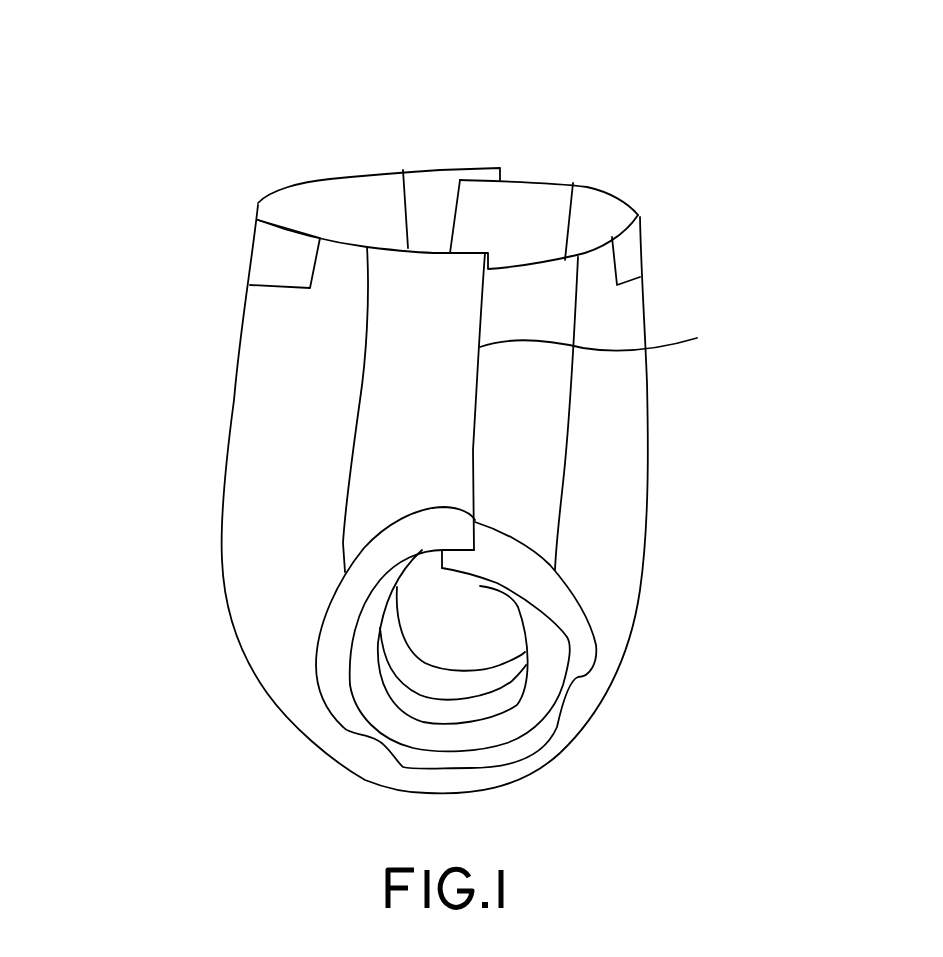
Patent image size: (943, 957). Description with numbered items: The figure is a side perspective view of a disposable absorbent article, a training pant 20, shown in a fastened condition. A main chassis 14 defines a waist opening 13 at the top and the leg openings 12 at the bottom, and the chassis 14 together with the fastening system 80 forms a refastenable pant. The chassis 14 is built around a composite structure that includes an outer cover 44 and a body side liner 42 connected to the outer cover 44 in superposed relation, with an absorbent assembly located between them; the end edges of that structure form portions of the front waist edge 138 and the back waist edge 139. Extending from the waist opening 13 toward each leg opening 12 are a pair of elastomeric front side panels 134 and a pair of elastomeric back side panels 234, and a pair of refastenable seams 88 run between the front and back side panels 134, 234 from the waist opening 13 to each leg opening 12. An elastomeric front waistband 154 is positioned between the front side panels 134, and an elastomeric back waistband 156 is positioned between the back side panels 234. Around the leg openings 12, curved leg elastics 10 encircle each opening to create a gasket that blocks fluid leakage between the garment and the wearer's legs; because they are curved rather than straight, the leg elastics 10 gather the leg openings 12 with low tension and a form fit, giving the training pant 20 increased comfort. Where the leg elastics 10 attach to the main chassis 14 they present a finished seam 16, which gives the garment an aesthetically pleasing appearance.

The leg elastics 10 is at (573, 630).
The training pant 20 is at (207, 228).
The leg openings 12 is at (480, 593).
The finished seam 16 is at (543, 524).
The refastenable seams 88 is at (471, 140).
The waist opening 13 is at (514, 206).
The front side panels 134 is at (548, 283).
The front waist edge 138 is at (638, 215).
The back waist edge 139 is at (263, 202).
The back side panels 234 is at (392, 277).
The body side liner 42 is at (360, 183).
The back waistband 156 is at (247, 250).
The front waistband 154 is at (643, 248).
The outer cover 44 is at (277, 392).
The main chassis 14 is at (607, 407).
The fastening system 80 is at (606, 339).